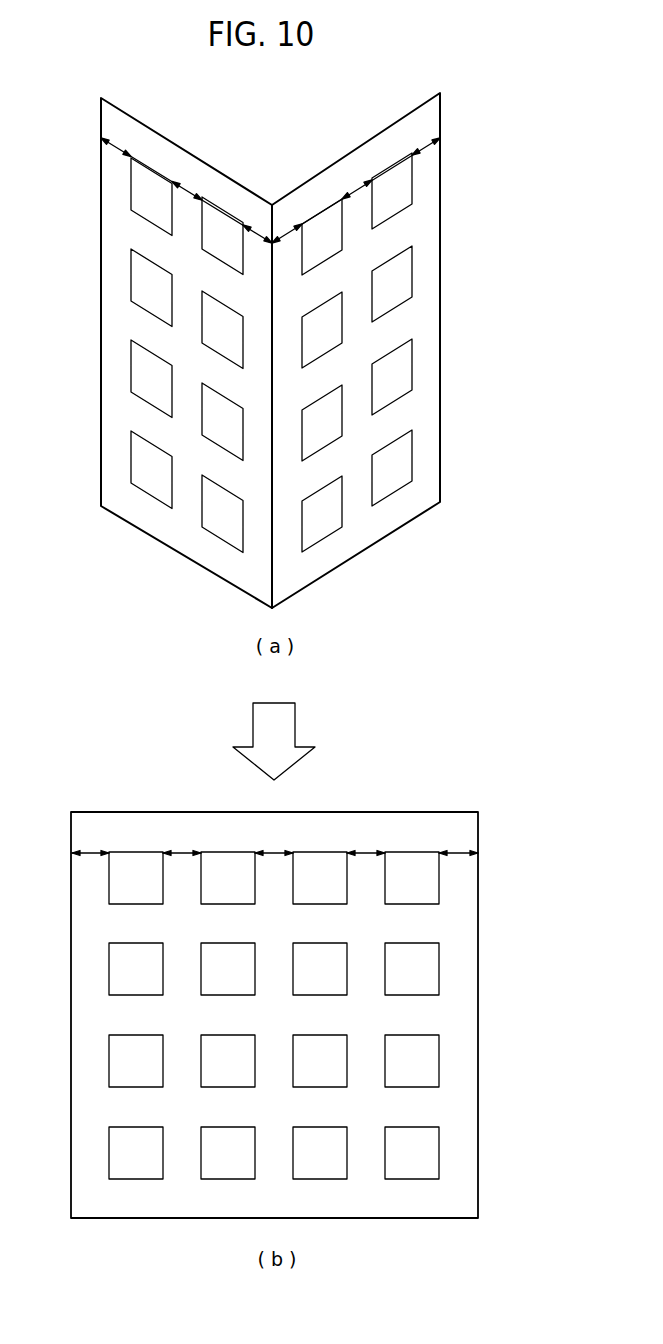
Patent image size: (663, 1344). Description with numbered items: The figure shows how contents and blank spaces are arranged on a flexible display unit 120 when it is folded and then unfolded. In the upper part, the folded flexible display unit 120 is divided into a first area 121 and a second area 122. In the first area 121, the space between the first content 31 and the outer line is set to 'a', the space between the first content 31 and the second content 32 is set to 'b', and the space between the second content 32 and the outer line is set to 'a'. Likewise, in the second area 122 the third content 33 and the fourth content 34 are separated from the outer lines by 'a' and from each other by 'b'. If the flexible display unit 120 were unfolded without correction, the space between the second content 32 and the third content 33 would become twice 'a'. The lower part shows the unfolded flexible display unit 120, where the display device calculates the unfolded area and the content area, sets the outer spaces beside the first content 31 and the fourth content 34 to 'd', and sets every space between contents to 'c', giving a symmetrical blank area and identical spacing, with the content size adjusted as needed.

The flexible display unit 120 is at (478, 929).
The first area 121 is at (153, 130).
The second area 122 is at (387, 129).
The first content 31 is at (131, 180).
The second content 32 is at (220, 212).
The third content 33 is at (320, 213).
The fourth content 34 is at (412, 178).